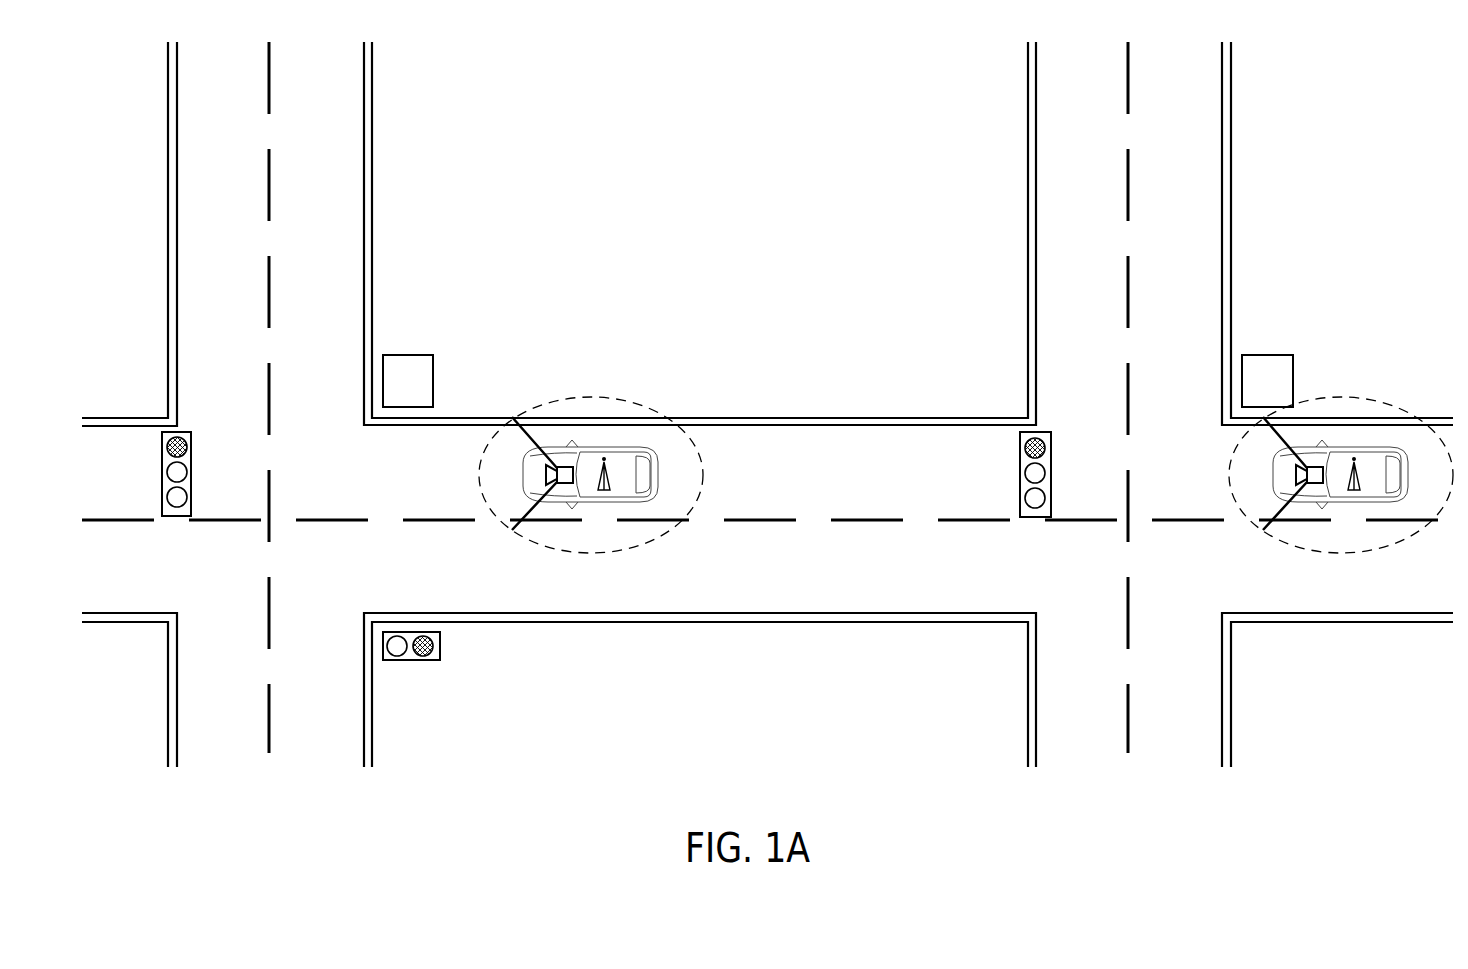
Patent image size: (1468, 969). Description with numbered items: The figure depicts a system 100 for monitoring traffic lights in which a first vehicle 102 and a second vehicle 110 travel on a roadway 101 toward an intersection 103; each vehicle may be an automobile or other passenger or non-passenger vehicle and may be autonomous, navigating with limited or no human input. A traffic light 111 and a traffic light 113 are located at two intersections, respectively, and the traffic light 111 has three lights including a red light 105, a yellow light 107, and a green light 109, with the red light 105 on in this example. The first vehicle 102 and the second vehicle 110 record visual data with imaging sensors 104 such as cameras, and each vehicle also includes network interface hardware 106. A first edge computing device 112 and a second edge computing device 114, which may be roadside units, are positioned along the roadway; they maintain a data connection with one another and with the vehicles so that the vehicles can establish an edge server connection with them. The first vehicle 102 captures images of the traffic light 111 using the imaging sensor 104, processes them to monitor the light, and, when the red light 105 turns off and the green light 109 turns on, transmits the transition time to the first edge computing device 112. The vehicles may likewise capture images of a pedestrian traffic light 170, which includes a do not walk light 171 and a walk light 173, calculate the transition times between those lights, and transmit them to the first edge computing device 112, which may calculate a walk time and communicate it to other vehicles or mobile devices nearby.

The system 100 is at (713, 122).
The roadway 101 is at (942, 438).
The first vehicle 102 is at (591, 475).
The intersection 103 is at (153, 395).
The imaging sensor 104 is at (556, 474).
The red light 105 is at (186, 446).
The network interface hardware 106 is at (603, 492).
The yellow light 107 is at (186, 471).
The green light 109 is at (186, 496).
The second vehicle 110 is at (1392, 452).
The traffic light 111 is at (162, 474).
The first edge computing device 112 is at (408, 355).
The traffic light 113 is at (1020, 475).
The second edge computing device 114 is at (918, 507).
The pedestrian traffic light 170 is at (440, 643).
The do not walk light 171 is at (400, 657).
The walk light 173 is at (426, 657).